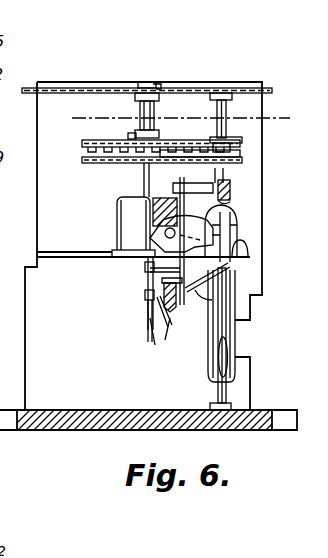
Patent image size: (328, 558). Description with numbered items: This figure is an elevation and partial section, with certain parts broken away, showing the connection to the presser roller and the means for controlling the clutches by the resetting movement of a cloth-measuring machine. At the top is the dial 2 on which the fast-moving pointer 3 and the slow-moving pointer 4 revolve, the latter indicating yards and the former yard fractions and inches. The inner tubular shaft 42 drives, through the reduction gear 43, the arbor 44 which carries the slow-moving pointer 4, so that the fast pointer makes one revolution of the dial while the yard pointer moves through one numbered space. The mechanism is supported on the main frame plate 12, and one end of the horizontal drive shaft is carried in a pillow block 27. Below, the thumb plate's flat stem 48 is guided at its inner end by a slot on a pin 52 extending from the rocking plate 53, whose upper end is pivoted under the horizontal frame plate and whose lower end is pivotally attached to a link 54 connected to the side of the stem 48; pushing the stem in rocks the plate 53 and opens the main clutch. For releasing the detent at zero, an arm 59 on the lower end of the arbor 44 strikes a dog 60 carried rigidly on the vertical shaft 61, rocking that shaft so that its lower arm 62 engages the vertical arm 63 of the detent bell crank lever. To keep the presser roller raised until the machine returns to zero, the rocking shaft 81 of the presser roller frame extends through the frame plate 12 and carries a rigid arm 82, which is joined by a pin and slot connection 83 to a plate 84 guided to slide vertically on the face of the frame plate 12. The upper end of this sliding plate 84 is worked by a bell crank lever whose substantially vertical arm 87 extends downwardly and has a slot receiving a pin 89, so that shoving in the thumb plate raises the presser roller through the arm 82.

The dial 2 is at (242, 88).
The fast-moving pointer 3 is at (153, 73).
The slow-moving pointer 4 is at (142, 83).
The main frame plate 12 is at (52, 226).
The pillow block 27 is at (128, 228).
The inner tubular shaft 42 is at (156, 85).
The reduction gear 43 is at (86, 141).
The arbor 44 is at (155, 113).
The flat stem 48 is at (168, 300).
The pin 52 is at (147, 307).
The rocking plate 53 is at (140, 290).
The link 54 is at (160, 323).
The arm 59 is at (133, 138).
The dog 60 is at (242, 140).
The vertical shaft 61 is at (228, 112).
The arm 62 is at (230, 187).
The vertical arm 63 is at (163, 213).
The rocking shaft 81 is at (248, 250).
The rigid arm 82 is at (237, 242).
The pin and slot connection 83 is at (147, 257).
The sliding plate 84 is at (252, 293).
The vertical arm 87 is at (228, 310).
The pin 89 is at (187, 290).